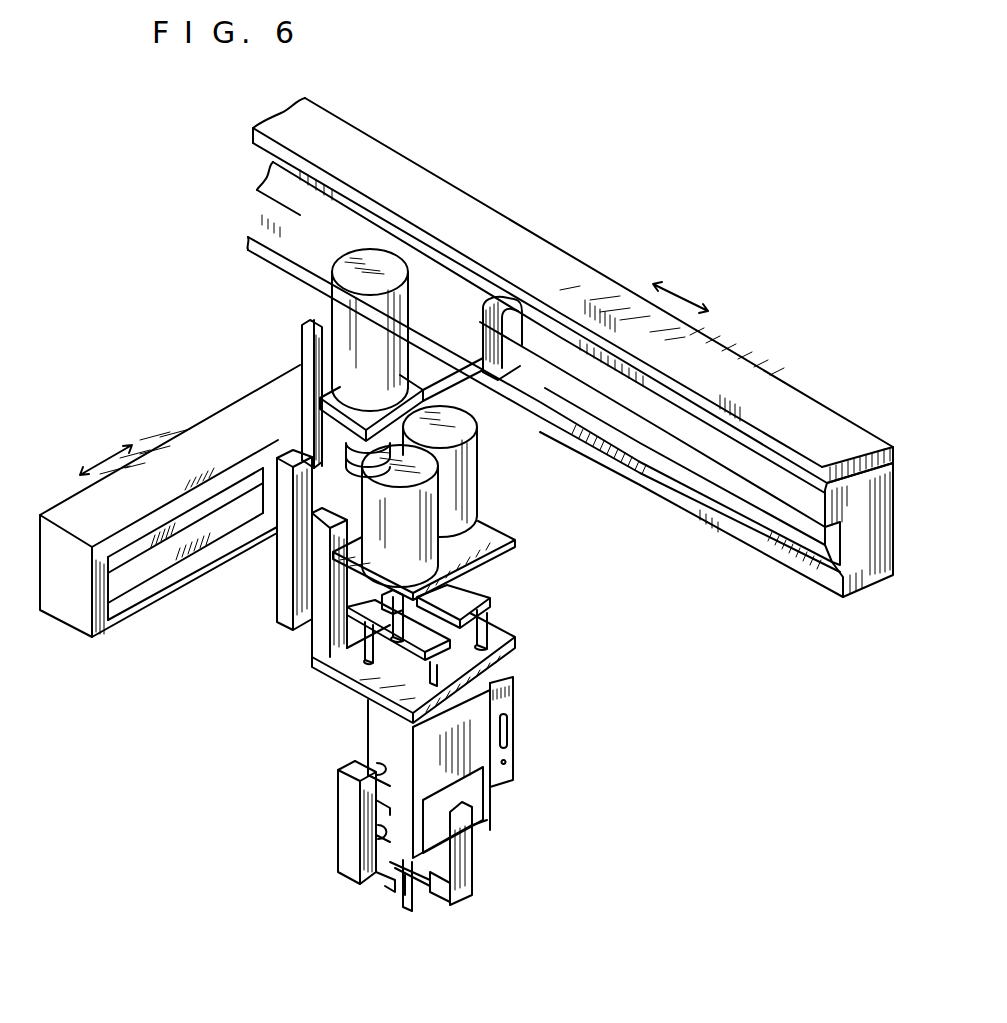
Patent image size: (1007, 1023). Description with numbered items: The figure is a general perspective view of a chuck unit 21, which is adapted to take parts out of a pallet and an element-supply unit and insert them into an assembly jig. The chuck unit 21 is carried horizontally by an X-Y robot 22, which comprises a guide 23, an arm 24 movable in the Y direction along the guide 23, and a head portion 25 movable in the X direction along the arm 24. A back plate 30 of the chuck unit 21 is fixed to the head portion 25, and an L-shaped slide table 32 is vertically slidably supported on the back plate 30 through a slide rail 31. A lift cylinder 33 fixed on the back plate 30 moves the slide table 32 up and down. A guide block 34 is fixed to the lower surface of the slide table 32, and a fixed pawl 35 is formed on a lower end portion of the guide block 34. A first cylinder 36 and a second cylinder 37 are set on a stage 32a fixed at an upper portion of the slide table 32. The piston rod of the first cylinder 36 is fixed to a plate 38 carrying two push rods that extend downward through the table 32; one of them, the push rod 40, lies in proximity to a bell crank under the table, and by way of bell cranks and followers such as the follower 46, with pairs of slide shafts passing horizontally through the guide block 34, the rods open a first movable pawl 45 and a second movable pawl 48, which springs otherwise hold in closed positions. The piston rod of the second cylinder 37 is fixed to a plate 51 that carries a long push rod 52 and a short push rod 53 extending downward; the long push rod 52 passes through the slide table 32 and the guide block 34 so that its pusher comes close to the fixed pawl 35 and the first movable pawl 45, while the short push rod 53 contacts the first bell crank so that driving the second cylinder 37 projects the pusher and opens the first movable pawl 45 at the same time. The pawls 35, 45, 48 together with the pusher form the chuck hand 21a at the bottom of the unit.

The chuck unit 21 is at (204, 744).
The chuck hand 21a is at (389, 926).
The X-Y robot 22 is at (570, 347).
The guide 23 is at (526, 246).
The arm 24 is at (188, 435).
The head portion 25 is at (285, 455).
The back plate 30 is at (260, 497).
The slide rail 31 is at (313, 498).
The slide table 32 is at (313, 648).
The stage 32a is at (510, 533).
The lift cylinder 33 is at (340, 302).
The guide block 34 is at (377, 743).
The fixed pawl 35 is at (420, 880).
The first cylinder 36 is at (462, 463).
The second cylinder 37 is at (427, 512).
The plate 38 is at (473, 592).
The push rod 40 is at (487, 617).
The first movable pawl 45 is at (463, 877).
The follower 46 is at (507, 755).
The second movable pawl 48 is at (343, 848).
The plate 51 is at (417, 643).
The long push rod 52 is at (507, 672).
The short push rod 53 is at (357, 650).